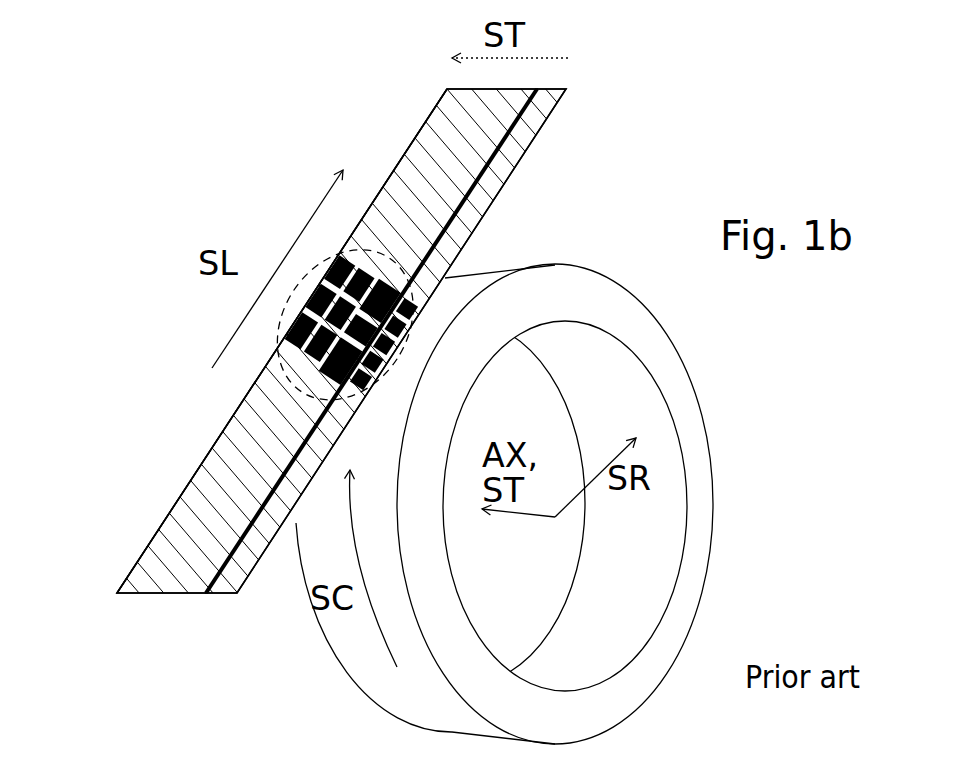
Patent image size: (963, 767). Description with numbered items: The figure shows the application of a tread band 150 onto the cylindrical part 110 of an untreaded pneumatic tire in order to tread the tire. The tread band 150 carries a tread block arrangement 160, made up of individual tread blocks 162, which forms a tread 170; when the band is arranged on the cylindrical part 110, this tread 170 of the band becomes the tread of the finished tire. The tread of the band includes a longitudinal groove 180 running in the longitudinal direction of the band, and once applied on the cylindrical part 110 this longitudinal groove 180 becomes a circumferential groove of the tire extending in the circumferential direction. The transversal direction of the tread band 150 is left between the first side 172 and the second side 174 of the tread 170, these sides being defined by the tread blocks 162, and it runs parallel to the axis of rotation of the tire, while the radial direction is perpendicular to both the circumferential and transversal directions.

The cylindrical part 110 is at (682, 395).
The tread band 150 is at (540, 128).
The tread block arrangement 160 is at (284, 345).
The tread blocks 162 is at (398, 285).
The tread 170 is at (451, 146).
The first side 172 is at (266, 574).
The second side 174 is at (160, 504).
The longitudinal groove 180 is at (232, 558).